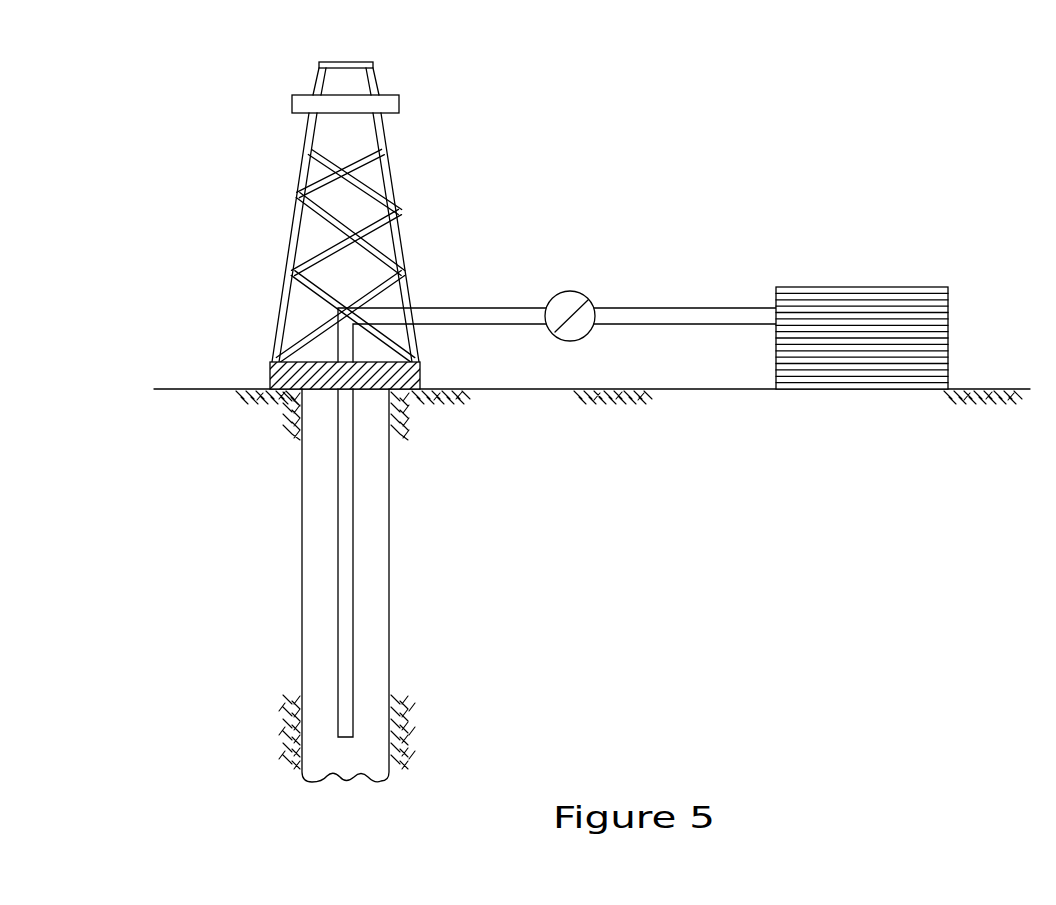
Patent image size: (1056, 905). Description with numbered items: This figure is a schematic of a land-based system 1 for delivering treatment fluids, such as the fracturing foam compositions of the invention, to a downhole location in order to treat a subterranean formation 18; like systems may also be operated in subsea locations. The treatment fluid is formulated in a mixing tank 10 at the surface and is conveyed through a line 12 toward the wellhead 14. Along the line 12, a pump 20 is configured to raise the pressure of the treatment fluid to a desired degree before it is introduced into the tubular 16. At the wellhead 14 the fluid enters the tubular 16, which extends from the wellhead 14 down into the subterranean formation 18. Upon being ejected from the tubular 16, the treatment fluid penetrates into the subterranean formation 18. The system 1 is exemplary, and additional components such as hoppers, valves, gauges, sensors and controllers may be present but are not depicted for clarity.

The system 1 is at (152, 95).
The mixing tank 10 is at (935, 287).
The line 12 is at (480, 307).
The wellhead 14 is at (268, 376).
The tubular 16 is at (353, 508).
The subterranean formation 18 is at (226, 599).
The pump 20 is at (582, 292).